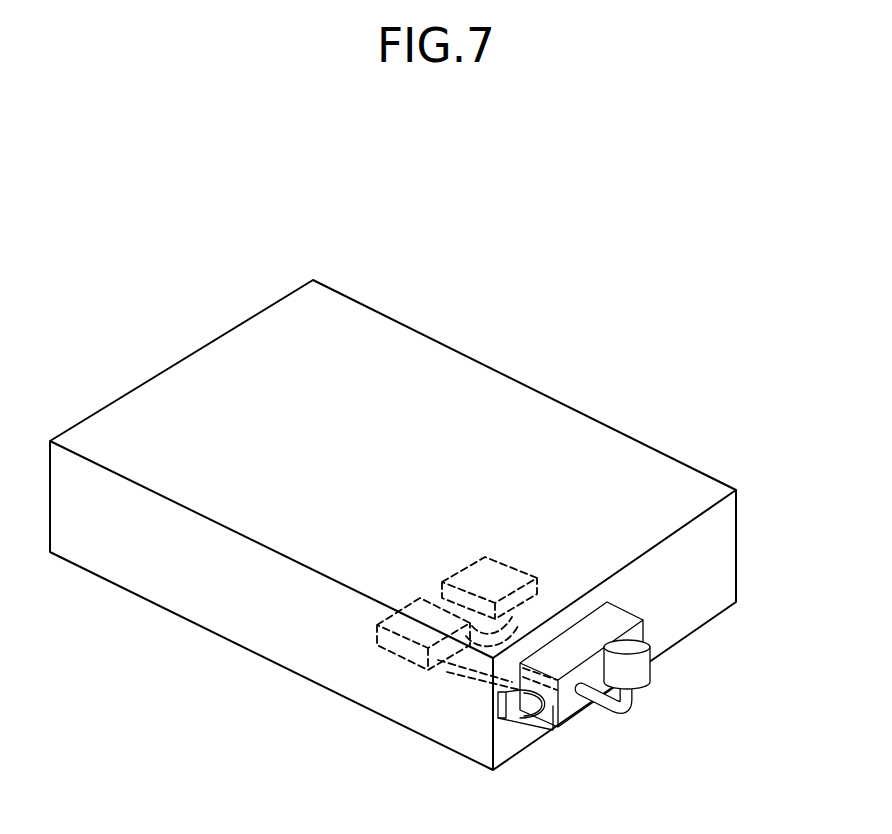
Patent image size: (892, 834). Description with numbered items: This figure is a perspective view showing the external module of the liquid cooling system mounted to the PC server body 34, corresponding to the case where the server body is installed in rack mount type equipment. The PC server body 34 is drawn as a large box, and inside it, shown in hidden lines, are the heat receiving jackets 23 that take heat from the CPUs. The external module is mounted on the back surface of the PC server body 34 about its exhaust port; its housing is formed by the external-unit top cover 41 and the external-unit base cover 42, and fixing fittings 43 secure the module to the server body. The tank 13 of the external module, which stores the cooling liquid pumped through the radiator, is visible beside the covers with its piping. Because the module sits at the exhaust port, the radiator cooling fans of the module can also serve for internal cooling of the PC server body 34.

The PC server body 34 is at (582, 432).
The heat receiving jackets 23 is at (377, 637).
The external-unit top cover 41 is at (613, 618).
The external-unit base cover 42 is at (540, 693).
The fixing fittings 43 is at (497, 702).
The tank 13 is at (640, 668).